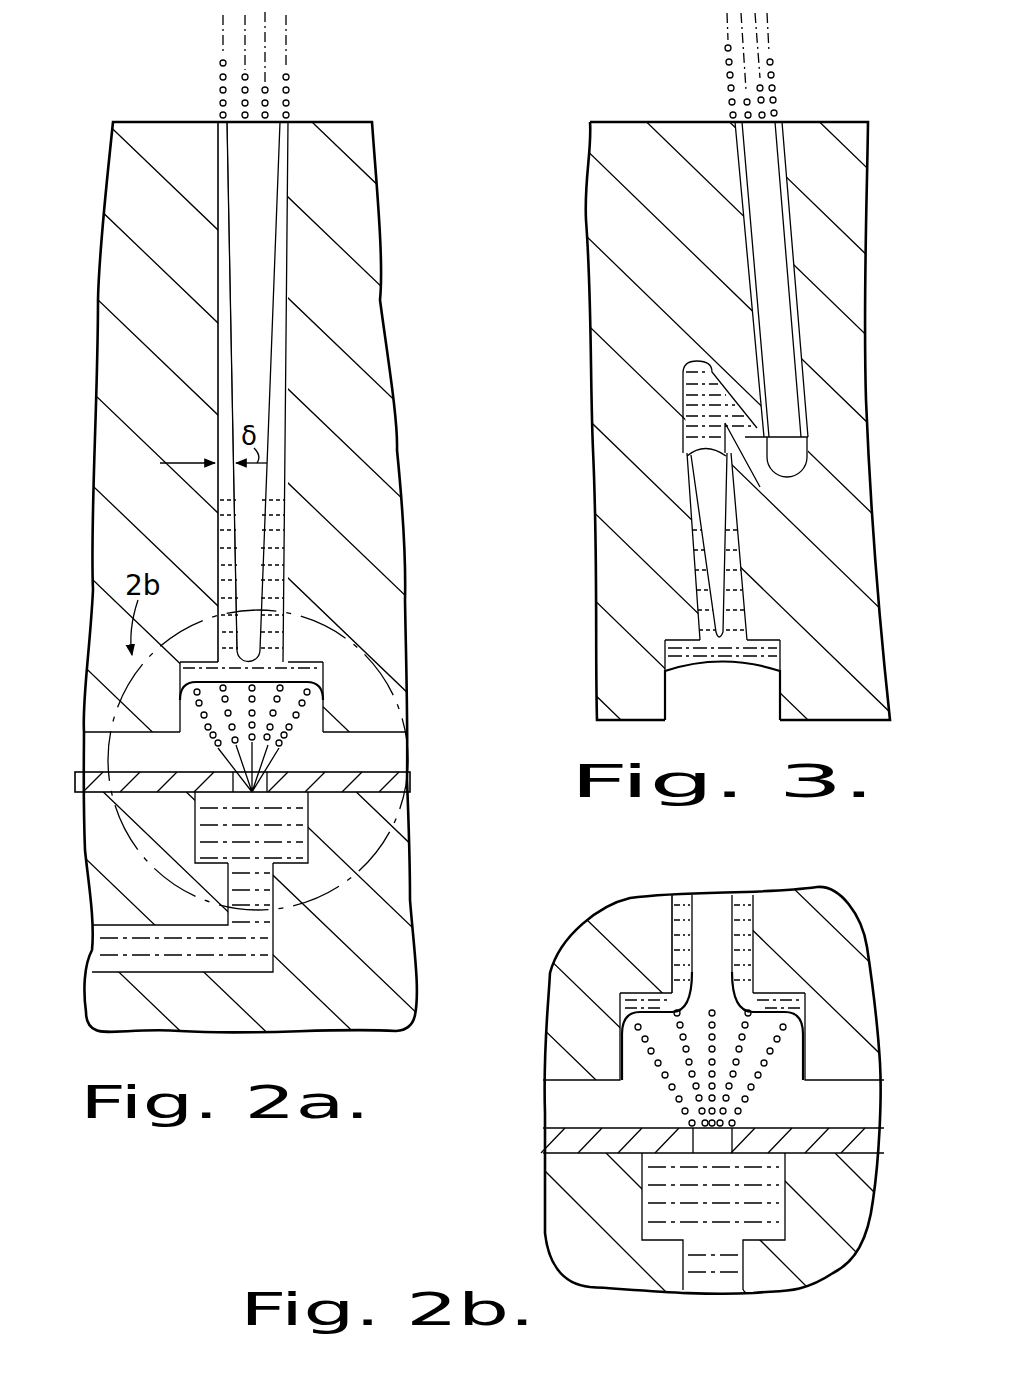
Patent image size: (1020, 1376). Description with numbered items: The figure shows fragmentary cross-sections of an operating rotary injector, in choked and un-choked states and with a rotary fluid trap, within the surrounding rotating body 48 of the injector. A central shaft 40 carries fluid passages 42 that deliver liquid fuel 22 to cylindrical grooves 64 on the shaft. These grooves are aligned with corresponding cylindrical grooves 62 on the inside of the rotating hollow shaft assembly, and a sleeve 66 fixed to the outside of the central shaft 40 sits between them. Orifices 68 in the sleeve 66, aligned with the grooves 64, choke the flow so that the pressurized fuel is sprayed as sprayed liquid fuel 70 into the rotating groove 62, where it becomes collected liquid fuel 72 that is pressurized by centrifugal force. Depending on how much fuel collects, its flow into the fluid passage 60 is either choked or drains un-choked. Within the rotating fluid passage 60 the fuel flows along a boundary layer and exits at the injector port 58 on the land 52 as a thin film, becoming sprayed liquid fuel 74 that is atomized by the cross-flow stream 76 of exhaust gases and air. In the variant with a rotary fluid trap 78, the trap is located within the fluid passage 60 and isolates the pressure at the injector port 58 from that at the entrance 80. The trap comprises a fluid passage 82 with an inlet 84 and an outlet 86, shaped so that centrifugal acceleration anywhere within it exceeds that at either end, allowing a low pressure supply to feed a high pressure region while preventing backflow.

In FIG. 2A, the liquid fuel 22 is at (237, 565).
In FIG. 2B, the liquid fuel 22 is at (698, 920).
In FIG. 2A, the central shaft 40 is at (413, 950).
In FIG. 2B, the central shaft 40 is at (548, 1210).
In FIG. 2A, the fluid passage 42 is at (270, 907).
In FIG. 2A, the housing block 48 is at (378, 200).
In FIG. 3, the housing block 48 is at (590, 225).
In FIG. 2B, the housing block 48 is at (571, 935).
In FIG. 2A, the land 52 is at (333, 122).
In FIG. 3, the land 52 is at (845, 122).
In FIG. 2A, the injector port 58 is at (296, 110).
In FIG. 3, the injector port 58 is at (735, 118).
In FIG. 2A, the fluid passage 60 is at (292, 170).
In FIG. 3, the fluid passage 60 is at (740, 185).
In FIG. 2B, the fluid passage 60 is at (755, 920).
In FIG. 2A, the cylindrical groove 62 is at (332, 677).
In FIG. 3, the cylindrical groove 62 is at (660, 656).
In FIG. 2B, the cylindrical groove 62 is at (810, 1023).
In FIG. 2A, the cylindrical groove 64 is at (300, 833).
In FIG. 2B, the cylindrical groove 64 is at (785, 1232).
In FIG. 2A, the sleeve 66 is at (390, 782).
In FIG. 2B, the sleeve 66 is at (557, 1142).
In FIG. 2A, the orifice 68 is at (262, 787).
In FIG. 2B, the orifice 68 is at (725, 1140).
In FIG. 2A, the sprayed liquid fuel 70 is at (203, 743).
In FIG. 2B, the sprayed liquid fuel 70 is at (650, 1093).
In FIG. 2A, the collected liquid fuel 72 is at (300, 667).
In FIG. 2B, the collected liquid fuel 72 is at (778, 1003).
In FIG. 2A, the sprayed liquid fuel 74 is at (295, 82).
In FIG. 3, the sprayed liquid fuel 74 is at (792, 78).
In FIG. 2A, the cross-flow stream 76 is at (160, 75).
In FIG. 3, the cross-flow stream 76 is at (675, 68).
In FIG. 3, the rotary fluid trap 78 is at (655, 408).
In FIG. 3, the entrance 80 is at (713, 680).
In FIG. 3, the fluid passage 82 is at (673, 380).
In FIG. 3, the inlet 84 is at (662, 434).
In FIG. 3, the outlet 86 is at (766, 452).